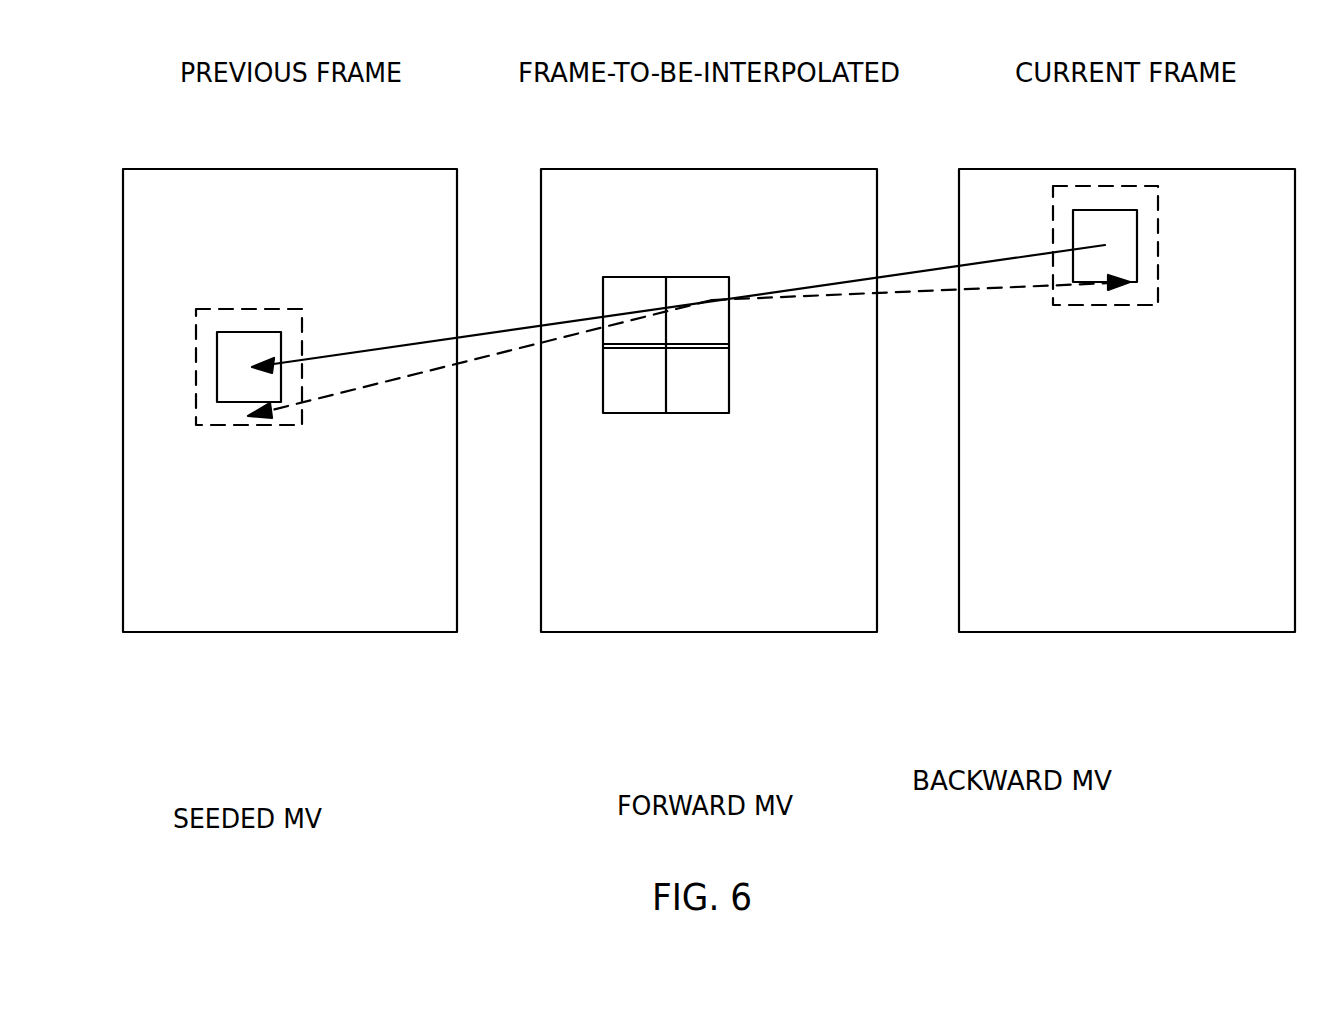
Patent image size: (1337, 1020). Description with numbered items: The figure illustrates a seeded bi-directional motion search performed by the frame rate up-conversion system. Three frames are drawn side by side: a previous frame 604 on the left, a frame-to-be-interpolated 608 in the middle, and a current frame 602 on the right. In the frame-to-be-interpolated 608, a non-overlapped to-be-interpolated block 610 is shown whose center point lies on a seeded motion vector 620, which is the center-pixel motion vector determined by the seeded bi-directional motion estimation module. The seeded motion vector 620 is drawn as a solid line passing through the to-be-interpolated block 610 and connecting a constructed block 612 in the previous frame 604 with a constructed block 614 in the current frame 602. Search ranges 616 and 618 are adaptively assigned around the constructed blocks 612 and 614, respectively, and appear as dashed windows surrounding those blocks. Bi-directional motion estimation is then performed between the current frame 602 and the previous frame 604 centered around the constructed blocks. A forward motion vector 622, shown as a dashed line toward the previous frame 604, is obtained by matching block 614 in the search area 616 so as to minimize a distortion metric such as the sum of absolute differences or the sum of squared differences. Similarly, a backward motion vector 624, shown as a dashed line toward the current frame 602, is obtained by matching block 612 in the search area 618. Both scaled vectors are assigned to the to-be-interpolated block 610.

The current frame 602 is at (1215, 169).
The previous frame 604 is at (378, 169).
The frame-to-be-interpolated 608 is at (797, 169).
The to-be-interpolated block 610 is at (645, 277).
The constructed block 612 is at (217, 360).
The constructed block 614 is at (1137, 250).
The search range 616 is at (256, 309).
The search range 618 is at (1090, 305).
The seeded motion vector 620 is at (364, 352).
The forward motion vector 622 is at (420, 371).
The backward motion vector 624 is at (945, 296).